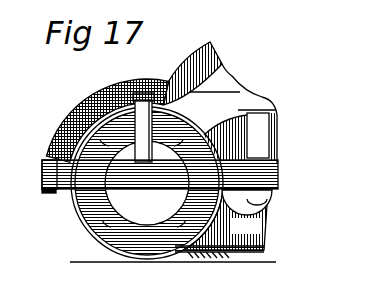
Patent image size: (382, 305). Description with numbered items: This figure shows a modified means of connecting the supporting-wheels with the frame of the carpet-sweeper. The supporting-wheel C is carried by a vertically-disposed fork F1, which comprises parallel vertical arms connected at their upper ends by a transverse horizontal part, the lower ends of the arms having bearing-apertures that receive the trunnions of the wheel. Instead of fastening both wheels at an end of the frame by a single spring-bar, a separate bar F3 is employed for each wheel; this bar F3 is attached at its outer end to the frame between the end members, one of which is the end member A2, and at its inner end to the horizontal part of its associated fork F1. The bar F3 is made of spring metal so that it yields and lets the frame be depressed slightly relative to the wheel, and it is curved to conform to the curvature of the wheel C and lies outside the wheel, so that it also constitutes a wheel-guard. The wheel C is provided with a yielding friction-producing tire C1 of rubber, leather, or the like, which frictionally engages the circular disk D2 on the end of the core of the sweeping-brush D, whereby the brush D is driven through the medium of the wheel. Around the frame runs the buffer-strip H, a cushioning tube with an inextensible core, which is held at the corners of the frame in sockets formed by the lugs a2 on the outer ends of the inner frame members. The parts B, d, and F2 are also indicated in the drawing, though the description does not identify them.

The yielding friction-producing tire C1 is at (182, 252).
The supporting-wheel C is at (147, 183).
The separate spring bar F3 is at (80, 104).
The arm B is at (193, 73).
The end member of the frame A2 is at (233, 113).
The block d is at (255, 143).
The rotative sweeping-brush D is at (238, 251).
The housing wall F2 is at (219, 234).
The circular disk D2 is at (262, 202).
The vertically-disposed fork F1 is at (139, 150).
The lug a2 is at (42, 178).
The buffer-strip H is at (70, 187).